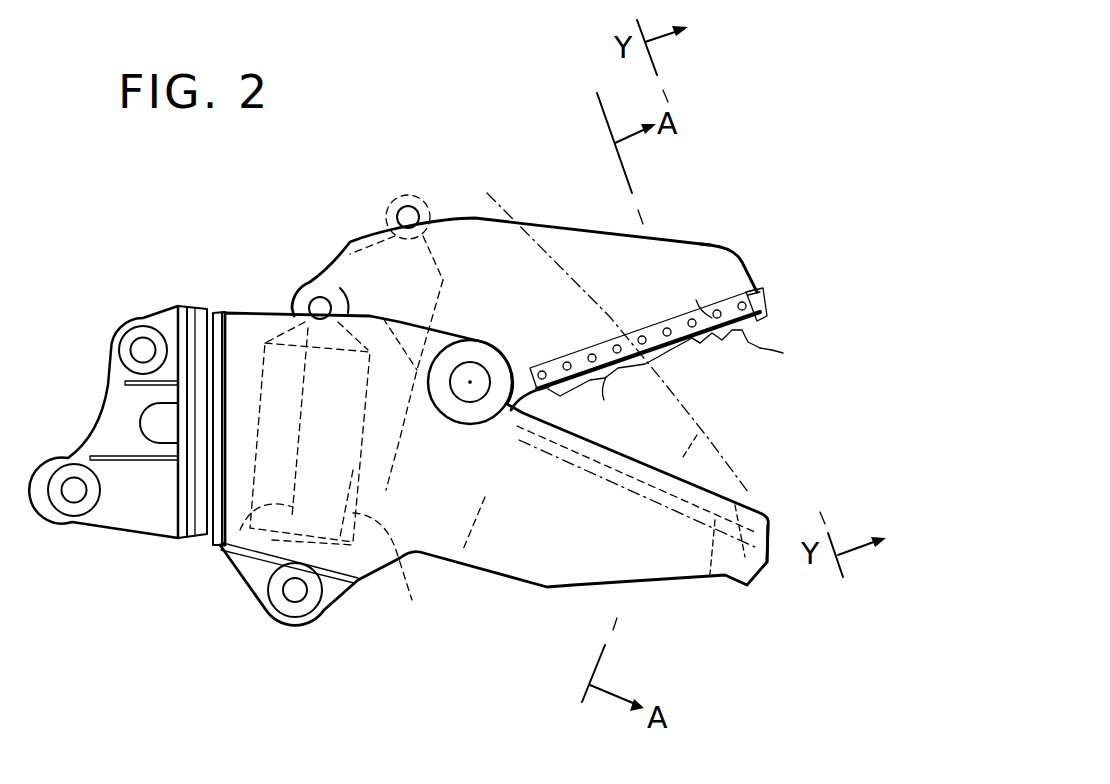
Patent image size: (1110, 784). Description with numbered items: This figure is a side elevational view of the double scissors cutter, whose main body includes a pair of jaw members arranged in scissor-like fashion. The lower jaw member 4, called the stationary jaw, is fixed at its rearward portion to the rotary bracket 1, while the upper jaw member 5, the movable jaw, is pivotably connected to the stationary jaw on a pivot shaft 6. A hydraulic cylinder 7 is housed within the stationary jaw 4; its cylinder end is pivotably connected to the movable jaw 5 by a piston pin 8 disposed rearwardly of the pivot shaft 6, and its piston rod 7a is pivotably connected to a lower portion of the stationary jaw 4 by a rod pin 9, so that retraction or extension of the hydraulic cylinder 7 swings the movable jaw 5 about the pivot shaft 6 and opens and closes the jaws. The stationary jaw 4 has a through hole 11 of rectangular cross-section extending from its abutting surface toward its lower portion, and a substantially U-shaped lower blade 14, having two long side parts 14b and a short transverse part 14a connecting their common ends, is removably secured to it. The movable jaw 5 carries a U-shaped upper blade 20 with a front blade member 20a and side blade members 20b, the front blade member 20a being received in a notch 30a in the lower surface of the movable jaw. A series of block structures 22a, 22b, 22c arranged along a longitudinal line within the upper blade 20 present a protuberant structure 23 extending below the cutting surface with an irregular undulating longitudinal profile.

The rotary bracket 1 is at (122, 312).
The lower jaw member 4 is at (570, 580).
The upper jaw member 5 is at (438, 186).
The pivot shaft 6 is at (463, 387).
The hydraulic cylinder 7 is at (402, 563).
The piston rod 7a is at (220, 547).
The piston pin 8 is at (393, 203).
The rod pin 9 is at (292, 592).
The through hole 11 is at (478, 535).
The lower blade 14 is at (733, 482).
The short transverse part 14a is at (770, 573).
The long side parts 14b is at (711, 576).
The upper blade 20 is at (778, 262).
The front blade member 20a is at (770, 318).
The side blade members 20b is at (700, 308).
The block structure 22a is at (628, 392).
The block structure 22b is at (623, 372).
The block structure 22c is at (804, 366).
The protuberant structure 23 is at (713, 363).
The notch 30a is at (748, 295).